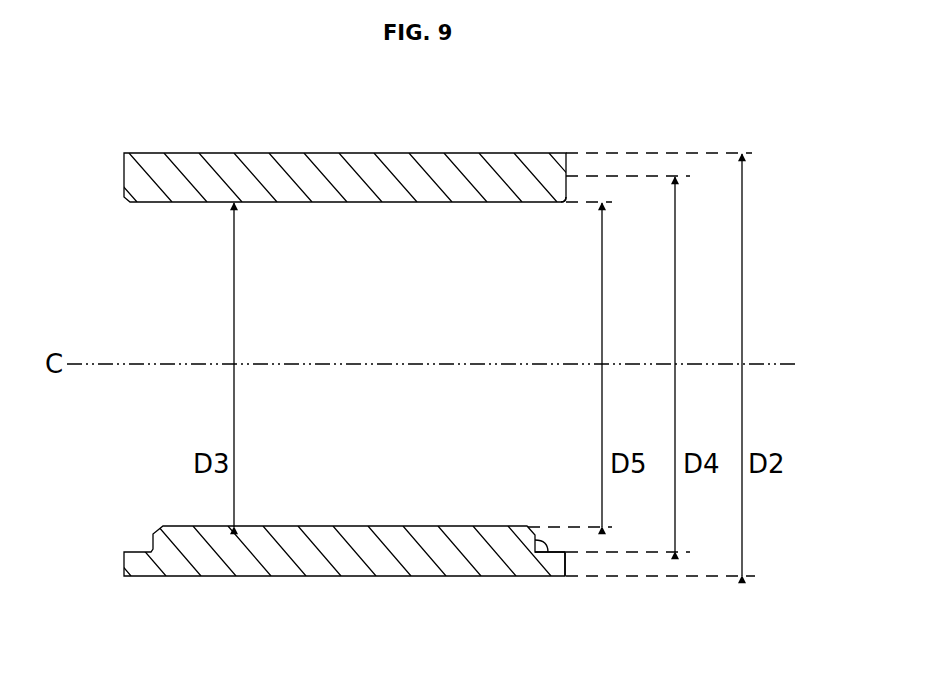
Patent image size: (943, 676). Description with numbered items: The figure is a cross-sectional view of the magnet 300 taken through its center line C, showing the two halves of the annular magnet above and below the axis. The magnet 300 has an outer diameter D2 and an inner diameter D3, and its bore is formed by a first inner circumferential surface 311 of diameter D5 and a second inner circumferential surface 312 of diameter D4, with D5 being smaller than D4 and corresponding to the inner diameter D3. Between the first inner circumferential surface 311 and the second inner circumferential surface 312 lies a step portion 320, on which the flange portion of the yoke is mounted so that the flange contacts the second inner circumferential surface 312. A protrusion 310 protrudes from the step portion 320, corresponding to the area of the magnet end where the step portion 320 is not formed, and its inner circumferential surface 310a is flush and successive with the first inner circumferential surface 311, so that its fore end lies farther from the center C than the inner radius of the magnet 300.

The magnet 300 is at (343, 153).
The protrusion 310 is at (402, 175).
The inner circumferential surface of the protrusion 310a is at (533, 202).
The first inner circumferential surface 311 is at (386, 587).
The second inner circumferential surface 312 is at (565, 550).
The step portion 320 is at (552, 552).